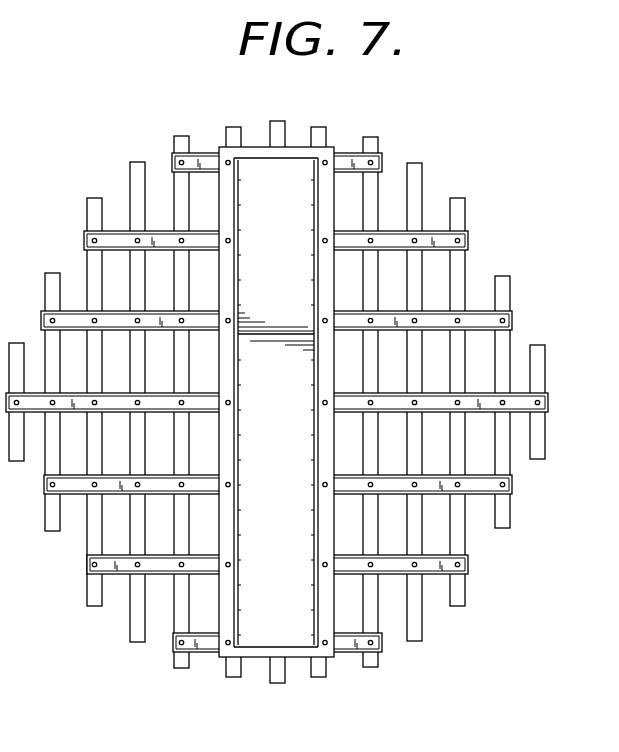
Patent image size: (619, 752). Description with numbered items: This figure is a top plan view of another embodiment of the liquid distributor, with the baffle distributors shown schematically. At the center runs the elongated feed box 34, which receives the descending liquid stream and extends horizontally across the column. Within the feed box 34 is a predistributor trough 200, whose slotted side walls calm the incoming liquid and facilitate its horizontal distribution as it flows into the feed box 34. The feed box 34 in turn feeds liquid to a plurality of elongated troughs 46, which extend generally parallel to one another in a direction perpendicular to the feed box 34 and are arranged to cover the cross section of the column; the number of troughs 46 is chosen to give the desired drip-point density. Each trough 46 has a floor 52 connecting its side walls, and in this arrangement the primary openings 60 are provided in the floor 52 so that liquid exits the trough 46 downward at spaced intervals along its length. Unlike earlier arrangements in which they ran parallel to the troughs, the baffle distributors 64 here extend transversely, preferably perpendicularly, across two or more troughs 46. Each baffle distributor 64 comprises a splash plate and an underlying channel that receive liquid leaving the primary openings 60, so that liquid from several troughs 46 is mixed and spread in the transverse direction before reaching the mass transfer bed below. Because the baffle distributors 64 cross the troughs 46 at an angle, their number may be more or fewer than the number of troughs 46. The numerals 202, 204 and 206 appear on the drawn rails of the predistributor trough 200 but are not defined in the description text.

The feed box 34 is at (332, 147).
The predistributor trough 200 is at (303, 159).
The guide rails 202 is at (314, 286).
The left rail 204 is at (238, 197).
The right rail 206 is at (314, 221).
The baffle distributor 64 is at (424, 170).
The trough 46 is at (468, 239).
The primary opening 60 is at (460, 316).
The floor 52 is at (484, 321).